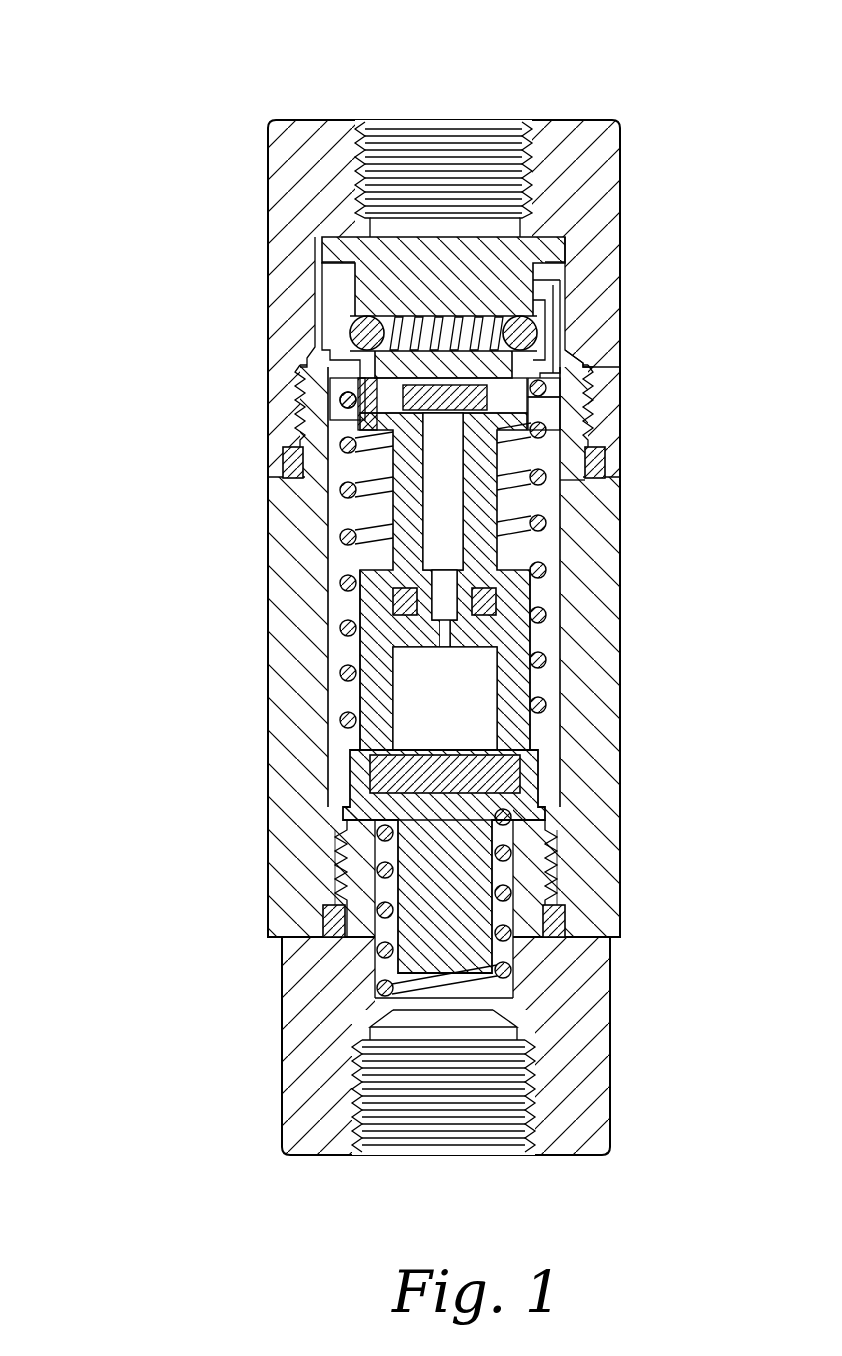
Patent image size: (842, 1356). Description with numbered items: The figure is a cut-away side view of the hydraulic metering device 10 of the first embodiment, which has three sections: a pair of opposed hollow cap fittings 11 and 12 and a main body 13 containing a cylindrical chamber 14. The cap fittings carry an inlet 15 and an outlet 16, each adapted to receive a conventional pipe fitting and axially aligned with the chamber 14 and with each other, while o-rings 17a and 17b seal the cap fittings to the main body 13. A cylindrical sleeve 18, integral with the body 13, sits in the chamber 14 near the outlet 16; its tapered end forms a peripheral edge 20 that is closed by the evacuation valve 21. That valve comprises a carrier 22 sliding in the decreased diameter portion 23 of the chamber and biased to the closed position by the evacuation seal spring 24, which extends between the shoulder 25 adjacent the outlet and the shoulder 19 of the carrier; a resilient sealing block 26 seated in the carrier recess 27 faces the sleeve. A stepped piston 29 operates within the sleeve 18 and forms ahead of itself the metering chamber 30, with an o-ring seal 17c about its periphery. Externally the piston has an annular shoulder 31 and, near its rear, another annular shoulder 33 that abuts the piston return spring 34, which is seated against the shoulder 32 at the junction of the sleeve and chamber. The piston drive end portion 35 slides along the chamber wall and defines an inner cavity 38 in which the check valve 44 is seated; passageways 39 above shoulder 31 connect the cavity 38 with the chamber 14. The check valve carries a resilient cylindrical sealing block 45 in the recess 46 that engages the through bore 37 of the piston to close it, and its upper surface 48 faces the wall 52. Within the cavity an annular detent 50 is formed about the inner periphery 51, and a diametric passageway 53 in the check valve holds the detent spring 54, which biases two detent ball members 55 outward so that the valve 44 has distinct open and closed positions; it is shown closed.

The hydraulic metering device 10 is at (205, 88).
The hollow cap fitting 11 is at (624, 232).
The hollow cap fitting 12 is at (560, 1105).
The main body 13 is at (590, 585).
The cylindrical chamber 14 is at (592, 462).
The inlet 15 is at (413, 120).
The outlet 16 is at (420, 1020).
The o-ring 17a is at (288, 466).
The o-ring 17b is at (328, 918).
The o-ring seal 17c is at (400, 598).
The cylindrical sleeve 18 is at (370, 652).
The shoulder 19 is at (537, 805).
The peripheral edge 20 is at (378, 735).
The evacuation valve 21 is at (337, 870).
The carrier 22 is at (540, 760).
The decreased diameter portion 23 is at (372, 828).
The evacuation seal spring 24 is at (550, 893).
The shoulder 25 is at (505, 1005).
The resilient sealing block 26 is at (505, 790).
The carrier recess 27 is at (425, 860).
The piston 29 is at (545, 505).
The metering chamber 30 is at (465, 685).
The annular shoulder 31 is at (375, 432).
The shoulder 32 is at (530, 725).
The annular shoulder 33 is at (330, 392).
The piston return spring 34 is at (572, 548).
The piston drive end portion 35 is at (565, 305).
The through bore 37 is at (440, 525).
The inner cavity 38 is at (580, 362).
The passageways 39 is at (342, 402).
The check valve 44 is at (373, 253).
The resilient cylindrical sealing block 45 is at (548, 415).
The recess 46 is at (540, 388).
The upper surface 48 is at (370, 214).
The annular detent 50 is at (430, 340).
The inner periphery 51 is at (352, 328).
The wall 52 is at (556, 250).
The passageway 53 is at (330, 280).
The detent spring 54 is at (372, 365).
The detent ball members 55 is at (562, 335).